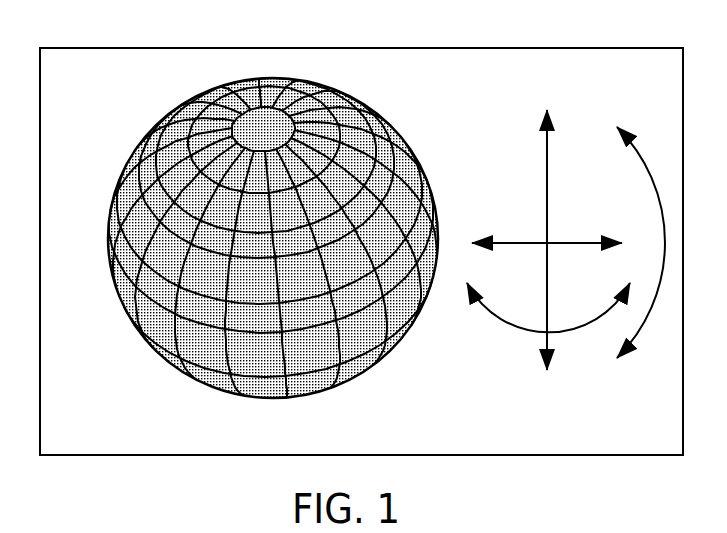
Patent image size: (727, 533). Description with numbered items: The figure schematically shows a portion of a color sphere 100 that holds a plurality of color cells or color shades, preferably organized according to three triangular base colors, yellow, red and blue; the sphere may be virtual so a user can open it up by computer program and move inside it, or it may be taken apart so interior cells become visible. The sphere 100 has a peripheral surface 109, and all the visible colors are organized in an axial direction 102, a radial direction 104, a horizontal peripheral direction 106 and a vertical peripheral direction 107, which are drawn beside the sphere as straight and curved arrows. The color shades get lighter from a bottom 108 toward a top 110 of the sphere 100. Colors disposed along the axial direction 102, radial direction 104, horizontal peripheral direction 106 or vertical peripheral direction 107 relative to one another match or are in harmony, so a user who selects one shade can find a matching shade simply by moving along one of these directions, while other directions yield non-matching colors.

The color sphere 100 is at (288, 221).
The axial direction 102 is at (547, 150).
The radial direction 104 is at (537, 237).
The horizontal peripheral direction 106 is at (505, 320).
The vertical peripheral direction 107 is at (650, 178).
The bottom 108 is at (273, 398).
The peripheral surface 109 is at (392, 128).
The top 110 is at (263, 125).